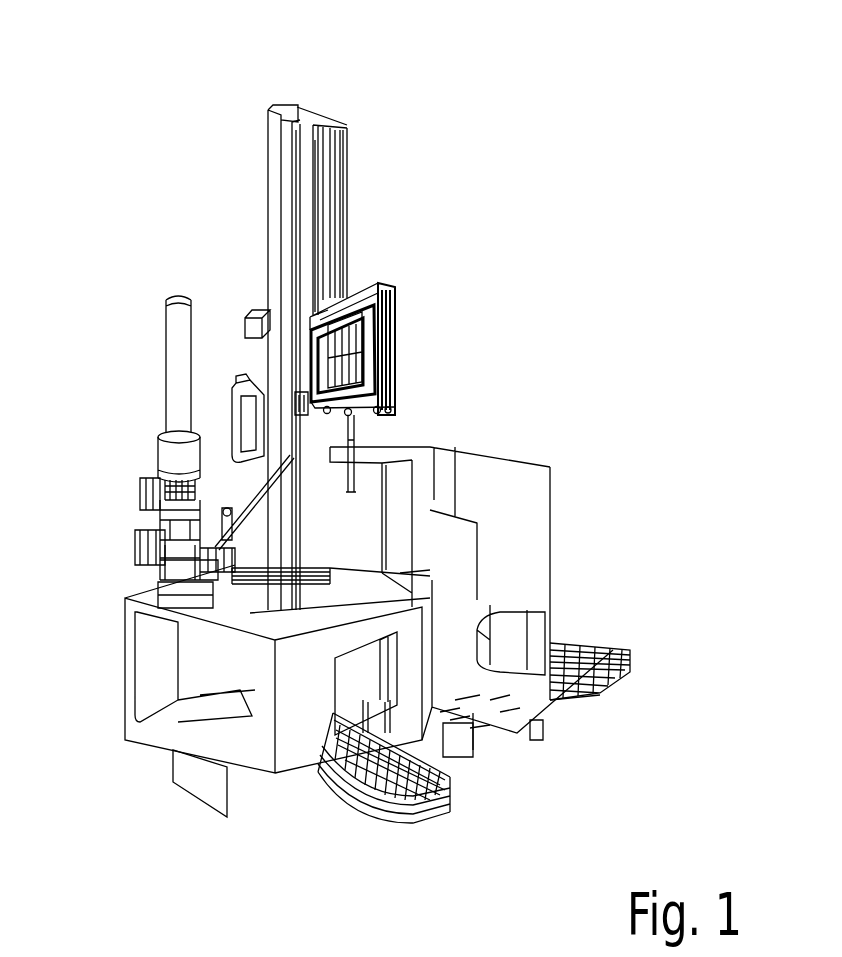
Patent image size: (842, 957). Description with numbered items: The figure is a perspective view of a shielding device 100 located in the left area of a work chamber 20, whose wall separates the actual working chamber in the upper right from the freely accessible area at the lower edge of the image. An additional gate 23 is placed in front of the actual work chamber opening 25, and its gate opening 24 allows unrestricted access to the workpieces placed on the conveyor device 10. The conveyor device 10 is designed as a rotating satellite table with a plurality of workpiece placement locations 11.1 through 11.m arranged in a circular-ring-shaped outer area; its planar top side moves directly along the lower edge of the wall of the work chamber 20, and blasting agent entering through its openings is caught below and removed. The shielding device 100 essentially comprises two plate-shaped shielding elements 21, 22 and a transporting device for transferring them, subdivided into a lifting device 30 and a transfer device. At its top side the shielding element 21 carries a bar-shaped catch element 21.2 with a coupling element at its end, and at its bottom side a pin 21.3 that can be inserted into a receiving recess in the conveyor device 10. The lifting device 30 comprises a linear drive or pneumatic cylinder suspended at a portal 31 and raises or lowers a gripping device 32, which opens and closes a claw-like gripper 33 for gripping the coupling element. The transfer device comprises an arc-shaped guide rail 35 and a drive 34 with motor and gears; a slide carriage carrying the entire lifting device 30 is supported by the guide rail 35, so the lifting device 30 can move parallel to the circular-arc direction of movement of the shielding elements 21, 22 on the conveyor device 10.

The shielding device 100 is at (651, 94).
The conveyor device 10 is at (600, 677).
The workpiece placement location 11.1 is at (340, 772).
The workpiece placement location 11.m is at (630, 645).
The work chamber 20 is at (528, 580).
The shielding element 21 is at (362, 510).
The catch element 21.2 is at (330, 450).
The pin 21.3 is at (327, 568).
The shielding element 22 is at (345, 659).
The additional gate 23 is at (288, 765).
The gate opening 24 is at (235, 700).
The work chamber opening 25 is at (262, 450).
The lifting device 30 is at (306, 218).
The portal 31 is at (288, 262).
The gripping device 32 is at (396, 339).
The claw-like gripper 33 is at (246, 392).
The drive 34 is at (158, 462).
The guide rail 35 is at (235, 612).